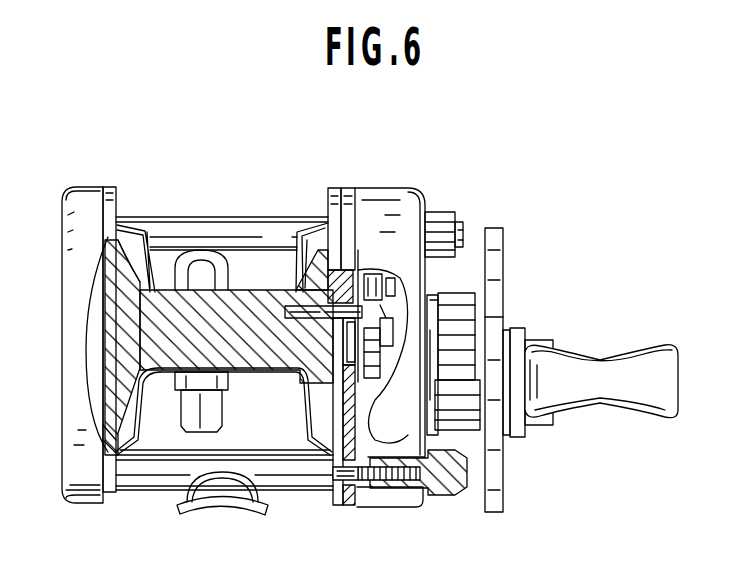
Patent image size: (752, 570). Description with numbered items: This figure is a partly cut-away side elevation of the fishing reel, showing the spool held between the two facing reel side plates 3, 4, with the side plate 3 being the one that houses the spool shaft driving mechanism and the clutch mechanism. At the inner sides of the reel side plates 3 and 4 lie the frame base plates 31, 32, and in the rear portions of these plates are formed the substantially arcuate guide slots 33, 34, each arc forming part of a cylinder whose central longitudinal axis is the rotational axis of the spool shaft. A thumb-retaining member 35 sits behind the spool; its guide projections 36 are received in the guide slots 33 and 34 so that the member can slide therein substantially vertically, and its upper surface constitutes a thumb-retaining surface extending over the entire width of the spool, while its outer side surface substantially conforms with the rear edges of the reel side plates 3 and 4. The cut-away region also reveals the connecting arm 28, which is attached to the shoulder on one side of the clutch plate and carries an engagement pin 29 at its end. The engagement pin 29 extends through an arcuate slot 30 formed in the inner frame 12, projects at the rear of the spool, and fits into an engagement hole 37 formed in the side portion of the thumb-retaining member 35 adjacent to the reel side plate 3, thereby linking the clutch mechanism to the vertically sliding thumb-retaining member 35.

The reel side plate 3 is at (417, 192).
The reel side plate 4 is at (72, 188).
The inner frame 12 is at (348, 188).
The connecting arm 28 is at (392, 395).
The engagement pin 29 is at (310, 310).
The arcuate slot 30 is at (350, 348).
The frame base plate 31 is at (334, 188).
The frame base plate 32 is at (111, 188).
The guide slot 33 is at (338, 406).
The guide slot 34 is at (108, 408).
The thumb-retaining member 35 is at (247, 320).
The guide projections 36 is at (103, 353).
The engagement hole 37 is at (290, 300).